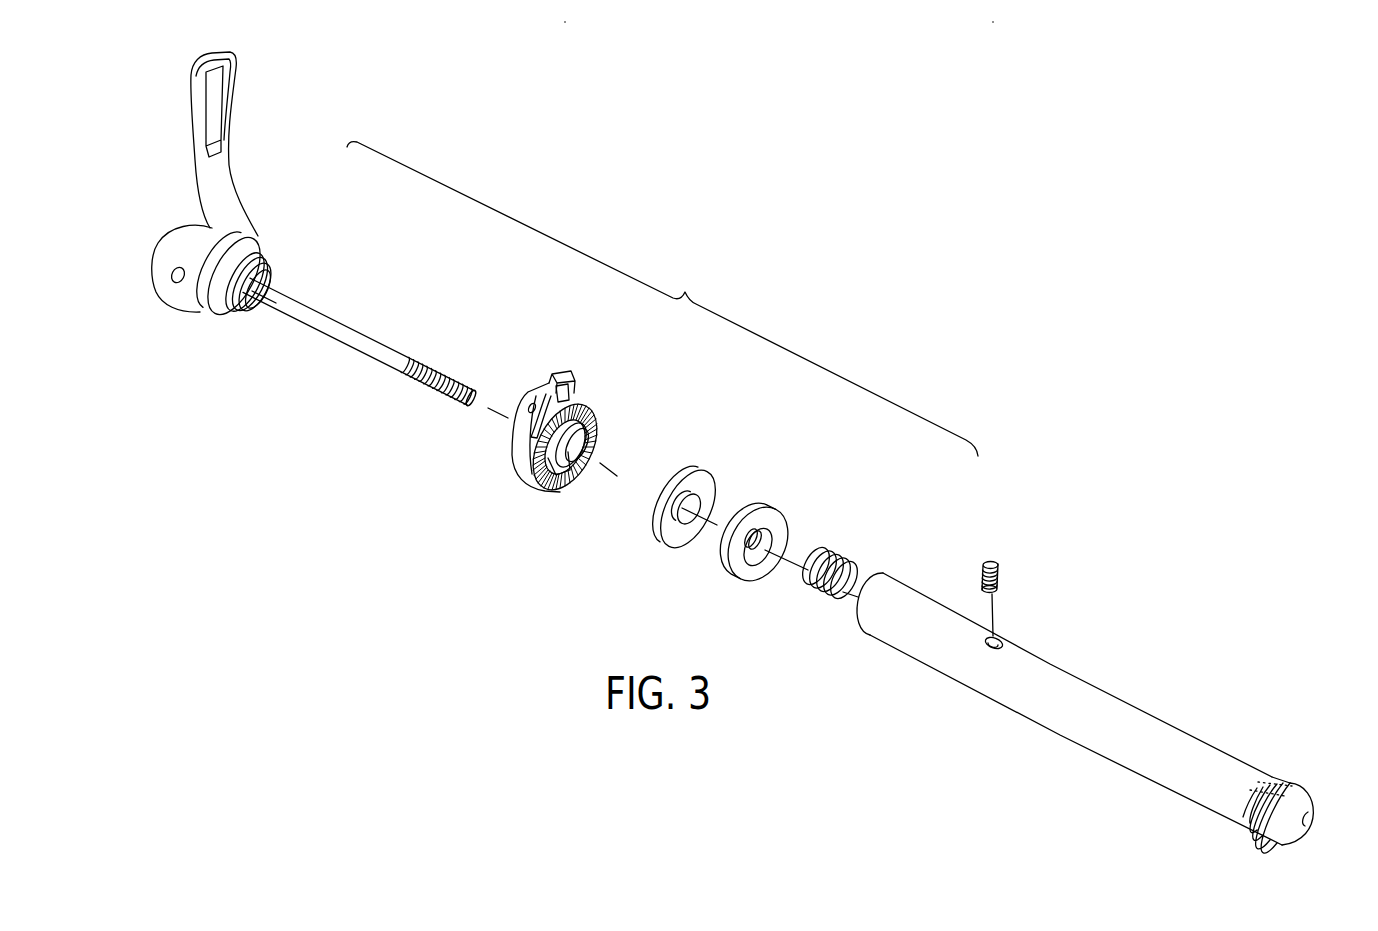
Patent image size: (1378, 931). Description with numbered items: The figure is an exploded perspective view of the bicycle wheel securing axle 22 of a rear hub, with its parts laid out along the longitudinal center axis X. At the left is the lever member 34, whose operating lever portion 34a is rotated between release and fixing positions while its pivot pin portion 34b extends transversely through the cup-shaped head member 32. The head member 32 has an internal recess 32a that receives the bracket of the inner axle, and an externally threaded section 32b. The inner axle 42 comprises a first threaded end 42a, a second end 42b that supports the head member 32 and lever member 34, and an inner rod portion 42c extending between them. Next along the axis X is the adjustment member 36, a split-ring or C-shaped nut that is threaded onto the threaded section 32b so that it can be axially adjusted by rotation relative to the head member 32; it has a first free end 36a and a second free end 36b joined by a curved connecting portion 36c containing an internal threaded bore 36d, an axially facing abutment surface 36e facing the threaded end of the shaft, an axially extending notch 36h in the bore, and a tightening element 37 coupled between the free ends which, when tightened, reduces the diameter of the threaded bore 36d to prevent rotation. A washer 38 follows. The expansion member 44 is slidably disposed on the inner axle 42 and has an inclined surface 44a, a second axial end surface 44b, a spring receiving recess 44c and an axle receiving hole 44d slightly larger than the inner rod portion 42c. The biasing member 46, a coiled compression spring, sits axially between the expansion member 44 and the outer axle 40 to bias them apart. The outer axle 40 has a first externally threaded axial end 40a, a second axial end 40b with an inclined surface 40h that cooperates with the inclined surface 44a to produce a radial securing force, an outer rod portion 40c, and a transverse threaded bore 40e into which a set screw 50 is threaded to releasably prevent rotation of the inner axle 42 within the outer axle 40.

The bicycle wheel securing axle 22 is at (662, 299).
The head member 32 is at (253, 297).
The internal recess 32a is at (258, 310).
The threaded section 32b is at (222, 302).
The lever member 34 is at (255, 198).
The operating lever portion 34a is at (218, 177).
The pivot pin portion 34b is at (174, 282).
The adjustment member 36 is at (555, 427).
The first free end 36a is at (583, 397).
The second free end 36b is at (540, 432).
The curved connecting portion 36c is at (542, 478).
The threaded bore 36d is at (590, 455).
The axially facing abutment surface 36e is at (600, 437).
The axially extending notch 36h is at (578, 490).
The tightening element 37 is at (574, 384).
The washer 38 is at (726, 474).
The outer axle 40 is at (1094, 672).
The first externally threaded axial end 40a is at (1292, 783).
The second axial end 40b is at (880, 623).
The outer rod portion 40c is at (967, 657).
The transverse threaded bore 40e is at (1000, 644).
The inclined surface 40h is at (862, 604).
The inner axle 42 is at (370, 342).
The first threaded end 42a is at (426, 371).
The second end 42b is at (272, 306).
The inner rod portion 42c is at (330, 328).
The expansion member 44 is at (747, 549).
The inclined surface 44a is at (778, 572).
The second axial end surface 44b is at (712, 552).
The spring receiving recess 44c is at (762, 560).
The axle receiving hole 44d is at (750, 548).
The biasing member 46 is at (846, 552).
The set screw 50 is at (999, 567).
The longitudinal center axis X is at (622, 491).